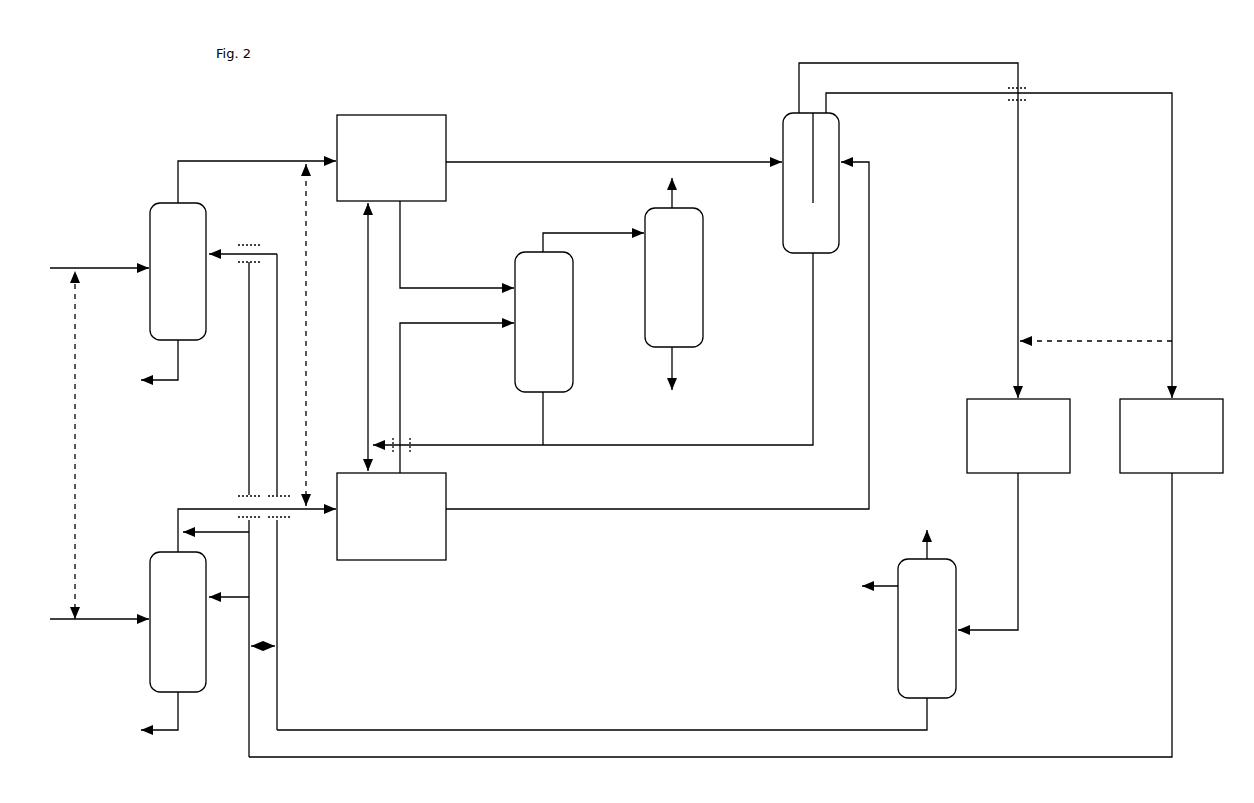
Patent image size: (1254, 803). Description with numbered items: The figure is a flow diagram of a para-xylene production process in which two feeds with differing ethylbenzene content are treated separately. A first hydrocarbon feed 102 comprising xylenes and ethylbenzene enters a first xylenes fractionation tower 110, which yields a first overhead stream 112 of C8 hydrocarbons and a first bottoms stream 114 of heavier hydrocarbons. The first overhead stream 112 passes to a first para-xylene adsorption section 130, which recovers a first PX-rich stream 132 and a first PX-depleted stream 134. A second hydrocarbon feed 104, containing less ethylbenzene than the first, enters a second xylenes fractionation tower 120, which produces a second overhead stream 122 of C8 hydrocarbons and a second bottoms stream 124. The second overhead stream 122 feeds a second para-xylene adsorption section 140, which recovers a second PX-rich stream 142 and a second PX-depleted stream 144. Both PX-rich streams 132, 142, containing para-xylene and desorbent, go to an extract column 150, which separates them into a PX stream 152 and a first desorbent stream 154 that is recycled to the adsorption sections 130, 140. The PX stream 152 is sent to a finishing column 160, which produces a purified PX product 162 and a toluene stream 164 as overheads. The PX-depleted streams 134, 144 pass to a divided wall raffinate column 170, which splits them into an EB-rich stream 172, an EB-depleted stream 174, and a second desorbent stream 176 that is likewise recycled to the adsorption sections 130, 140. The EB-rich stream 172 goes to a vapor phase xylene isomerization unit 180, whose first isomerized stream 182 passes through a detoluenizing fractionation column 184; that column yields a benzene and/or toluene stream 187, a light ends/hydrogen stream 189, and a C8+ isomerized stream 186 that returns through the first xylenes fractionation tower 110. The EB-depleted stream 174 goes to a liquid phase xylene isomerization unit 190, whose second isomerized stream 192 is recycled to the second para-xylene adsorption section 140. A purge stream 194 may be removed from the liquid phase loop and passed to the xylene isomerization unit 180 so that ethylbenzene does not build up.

The first hydrocarbon feed 102 is at (99, 255).
The second hydrocarbon feed 104 is at (99, 607).
The first xylenes fractionation tower 110 is at (178, 271).
The first overhead stream 112 is at (257, 170).
The first bottoms stream 114 is at (143, 364).
The second xylenes fractionation tower 120 is at (178, 622).
The second overhead stream 122 is at (239, 530).
The second bottoms stream 124 is at (143, 715).
The first para-xylene adsorption section 130 is at (391, 158).
The first PX-rich stream 132 is at (457, 244).
The first PX-depleted stream 134 is at (614, 150).
The second para-xylene adsorption section 140 is at (391, 516).
The second PX-rich stream 142 is at (457, 398).
The second PX-depleted stream 144 is at (657, 348).
The extract column 150 is at (544, 322).
The PX stream 152 is at (593, 232).
The first desorbent stream 154 is at (559, 418).
The finishing column 160 is at (674, 277).
The purified PX product 162 is at (689, 368).
The toluene stream 164 is at (689, 193).
The divided wall raffinate column 170 is at (811, 183).
The EB-rich stream 172 is at (898, 230).
The EB-depleted stream 174 is at (999, 245).
The second desorbent stream 176 is at (593, 352).
The xylene isomerization unit 180 is at (1018, 436).
The first isomerized stream 182 is at (1005, 551).
The detoluenizing fractionation column 184 is at (927, 628).
The C8+ isomerized stream 186 is at (602, 714).
The benzene and/or toluene stream 187 is at (866, 586).
The light ends/hydrogen stream 189 is at (929, 536).
The xylene isomerization unit 190 is at (1171, 436).
The second isomerized stream 192 is at (728, 615).
The purge stream 194 is at (1096, 352).